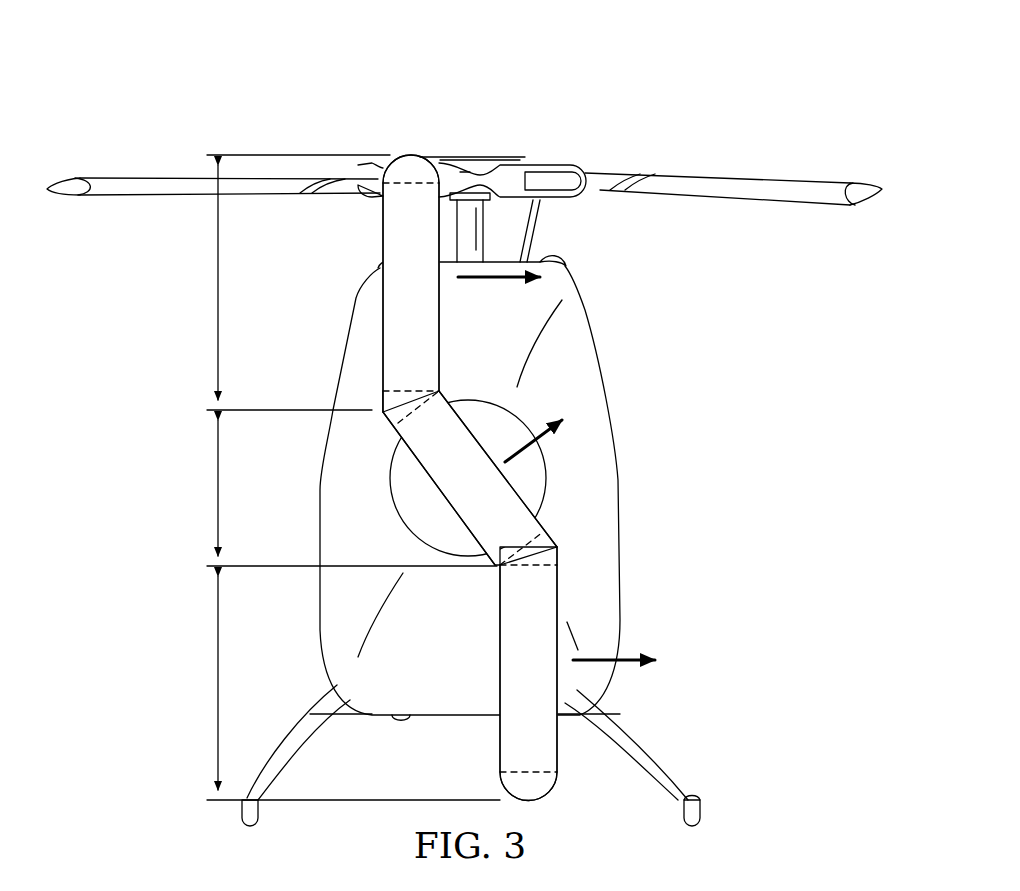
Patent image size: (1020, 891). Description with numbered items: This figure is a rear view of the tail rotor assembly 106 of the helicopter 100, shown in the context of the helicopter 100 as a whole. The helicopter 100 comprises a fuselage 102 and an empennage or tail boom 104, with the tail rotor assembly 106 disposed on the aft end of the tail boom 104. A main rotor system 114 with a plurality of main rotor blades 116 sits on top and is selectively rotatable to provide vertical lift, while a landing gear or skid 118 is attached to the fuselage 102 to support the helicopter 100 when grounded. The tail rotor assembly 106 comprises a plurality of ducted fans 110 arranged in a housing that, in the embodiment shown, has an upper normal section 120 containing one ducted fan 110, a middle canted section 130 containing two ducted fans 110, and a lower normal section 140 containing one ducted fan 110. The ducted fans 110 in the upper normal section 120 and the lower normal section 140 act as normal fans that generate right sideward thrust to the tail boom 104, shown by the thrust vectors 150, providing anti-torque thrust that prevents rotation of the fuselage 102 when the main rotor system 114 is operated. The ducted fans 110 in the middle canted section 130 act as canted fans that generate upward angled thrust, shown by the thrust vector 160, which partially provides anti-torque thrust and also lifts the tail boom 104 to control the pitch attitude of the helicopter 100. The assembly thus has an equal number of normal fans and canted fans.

The helicopter 100 is at (680, 110).
The fuselage 102 is at (320, 630).
The tail boom 104 is at (478, 400).
The tail rotor assembly 106 is at (398, 155).
The ducted fan 110 is at (381, 240).
The main rotor system 114 is at (489, 155).
The main rotor blade 116 is at (132, 178).
The landing gear or skid 118 is at (298, 745).
The upper normal section 120 is at (216, 280).
The middle canted section 130 is at (216, 488).
The lower normal section 140 is at (216, 700).
The thrust vector 150 is at (490, 285).
The thrust vector 160 is at (540, 440).